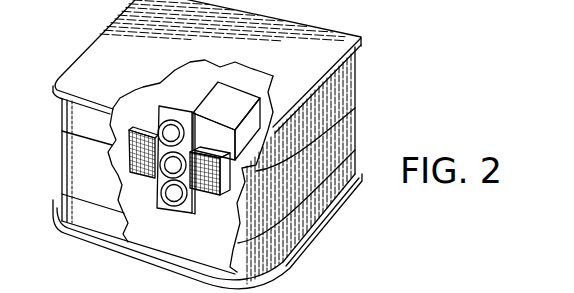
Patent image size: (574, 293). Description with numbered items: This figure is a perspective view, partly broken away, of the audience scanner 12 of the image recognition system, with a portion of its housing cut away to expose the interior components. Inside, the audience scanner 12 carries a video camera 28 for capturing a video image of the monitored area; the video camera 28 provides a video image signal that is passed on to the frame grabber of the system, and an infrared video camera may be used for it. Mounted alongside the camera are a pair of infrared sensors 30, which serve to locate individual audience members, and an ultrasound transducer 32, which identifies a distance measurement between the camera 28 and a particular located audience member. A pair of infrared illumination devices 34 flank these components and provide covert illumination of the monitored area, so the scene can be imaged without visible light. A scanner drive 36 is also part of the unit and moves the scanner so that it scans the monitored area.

The audience scanner 12 is at (374, 135).
The video camera 28 is at (158, 188).
The infrared sensors 30 is at (171, 133).
The ultrasound transducer 32 is at (174, 196).
The infrared illumination devices 34 is at (133, 128).
The scanner drive 36 is at (274, 129).